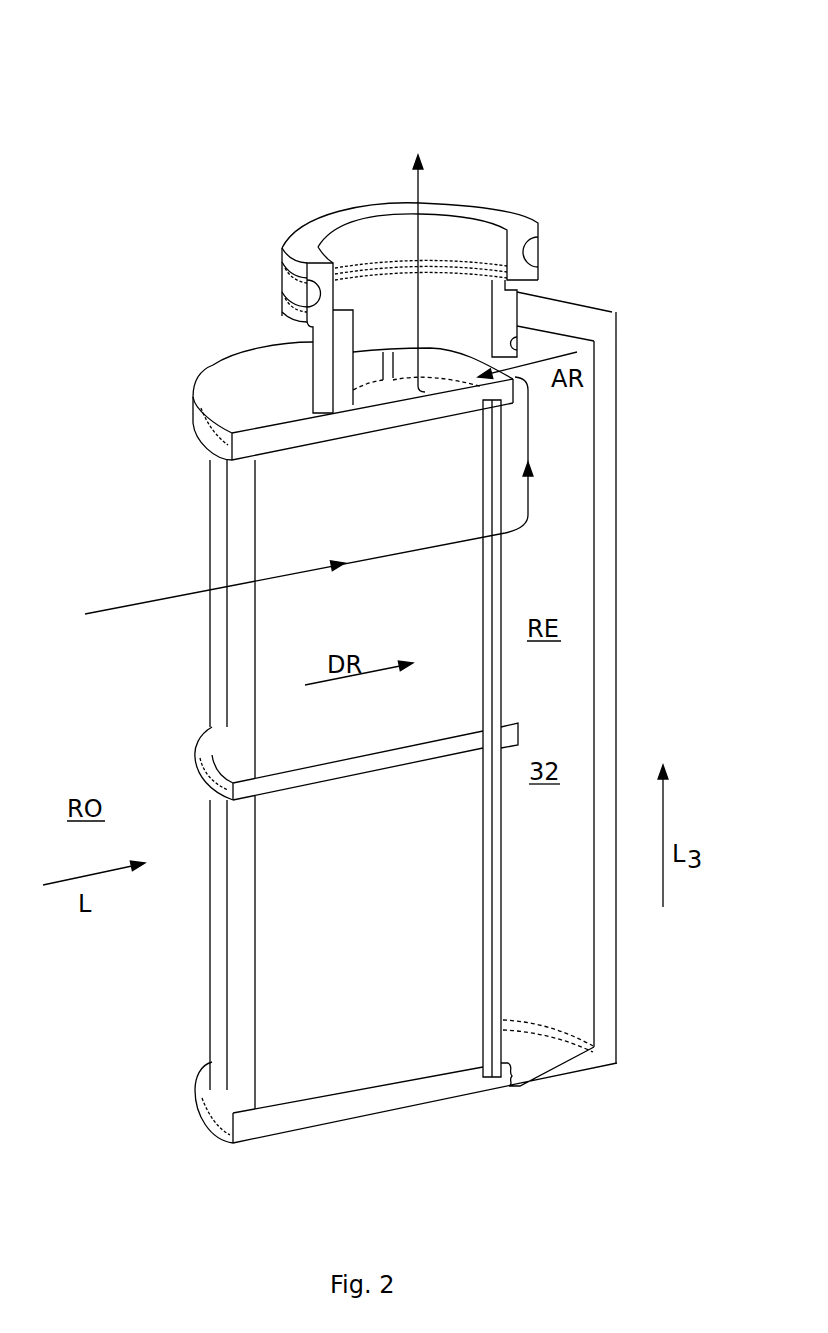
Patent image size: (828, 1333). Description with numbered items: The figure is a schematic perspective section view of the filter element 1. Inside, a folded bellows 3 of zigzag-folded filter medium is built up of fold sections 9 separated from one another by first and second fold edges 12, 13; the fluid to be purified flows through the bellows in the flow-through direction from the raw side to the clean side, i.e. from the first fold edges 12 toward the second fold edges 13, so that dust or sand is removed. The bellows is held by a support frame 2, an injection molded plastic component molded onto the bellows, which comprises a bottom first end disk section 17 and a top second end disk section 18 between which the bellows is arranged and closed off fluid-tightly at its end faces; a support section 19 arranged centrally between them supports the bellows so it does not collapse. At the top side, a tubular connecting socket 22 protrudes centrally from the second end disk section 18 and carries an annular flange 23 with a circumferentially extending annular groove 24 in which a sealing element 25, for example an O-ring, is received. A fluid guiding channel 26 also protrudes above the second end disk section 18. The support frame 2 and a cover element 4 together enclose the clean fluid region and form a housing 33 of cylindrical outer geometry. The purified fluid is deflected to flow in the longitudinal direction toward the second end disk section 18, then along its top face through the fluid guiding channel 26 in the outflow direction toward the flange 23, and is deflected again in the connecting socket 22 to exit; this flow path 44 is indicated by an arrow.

The filter element 1 is at (396, 82).
The support frame 2 is at (260, 372).
The folded bellows 3 is at (206, 643).
The cover element 4 is at (617, 572).
The fold section 9 is at (285, 968).
The fold edge 12 is at (237, 945).
The fold edge 13 is at (502, 952).
The first end disk section 17 is at (393, 1100).
The second end disk section 18 is at (247, 448).
The support section 19 is at (197, 757).
The connecting socket 22 is at (317, 395).
The annular flange 23 is at (307, 242).
The annular groove 24 is at (316, 289).
The sealing element 25 is at (535, 252).
The fluid guiding channel 26 is at (447, 370).
The housing 33 is at (620, 677).
The flow path 44 is at (420, 187).